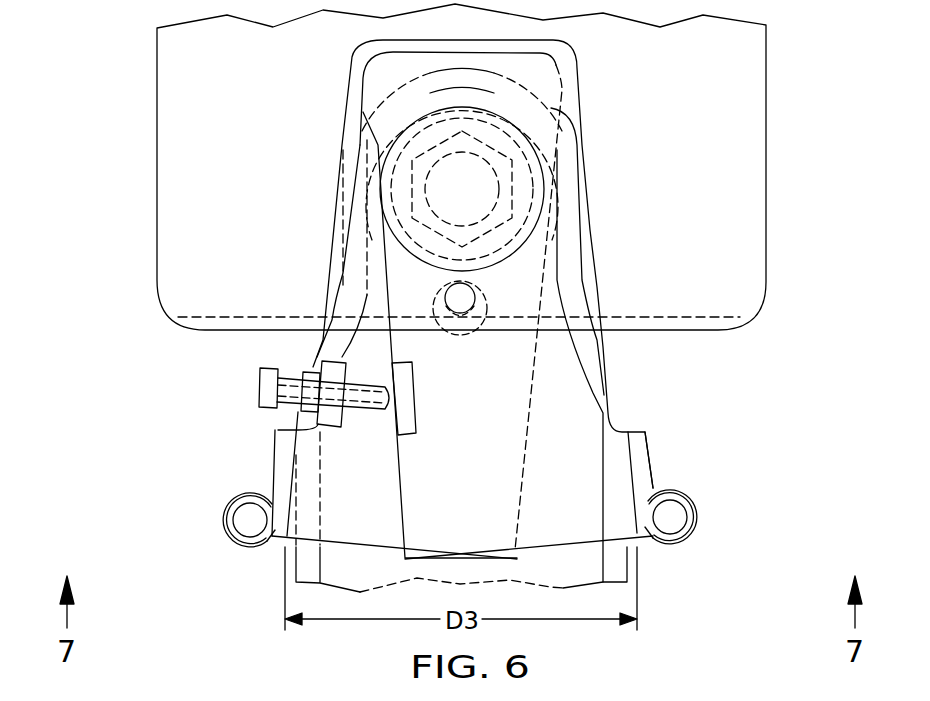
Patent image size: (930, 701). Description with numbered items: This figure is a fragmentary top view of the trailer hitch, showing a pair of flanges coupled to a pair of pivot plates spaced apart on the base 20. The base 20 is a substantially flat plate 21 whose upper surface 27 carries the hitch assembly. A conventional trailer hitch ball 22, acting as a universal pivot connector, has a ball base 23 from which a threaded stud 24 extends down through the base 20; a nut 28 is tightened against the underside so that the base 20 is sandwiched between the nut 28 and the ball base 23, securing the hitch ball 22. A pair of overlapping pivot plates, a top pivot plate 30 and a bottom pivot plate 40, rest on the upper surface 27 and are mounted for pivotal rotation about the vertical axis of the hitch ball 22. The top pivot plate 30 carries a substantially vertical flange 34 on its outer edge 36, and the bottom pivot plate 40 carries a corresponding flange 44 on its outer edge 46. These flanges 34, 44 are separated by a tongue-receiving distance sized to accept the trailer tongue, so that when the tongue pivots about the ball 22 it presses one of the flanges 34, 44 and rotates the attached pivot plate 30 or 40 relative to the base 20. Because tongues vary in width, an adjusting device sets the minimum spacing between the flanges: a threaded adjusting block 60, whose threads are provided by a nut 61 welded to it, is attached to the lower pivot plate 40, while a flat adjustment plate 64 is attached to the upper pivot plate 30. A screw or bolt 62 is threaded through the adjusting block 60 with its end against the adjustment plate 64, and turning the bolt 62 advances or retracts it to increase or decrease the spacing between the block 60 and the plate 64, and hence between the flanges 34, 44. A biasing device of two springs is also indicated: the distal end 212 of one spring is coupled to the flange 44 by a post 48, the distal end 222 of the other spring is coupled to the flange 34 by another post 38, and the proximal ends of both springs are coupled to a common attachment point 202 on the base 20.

The base 20 is at (767, 70).
The flat plate 21 is at (760, 213).
The trailer hitch ball 22 is at (527, 240).
The ball base 23 is at (405, 158).
The threaded stud 24 is at (482, 183).
The upper surface 27 is at (722, 117).
The nut 28 is at (440, 148).
The top pivot plate 30 is at (567, 60).
The flange 34 is at (645, 448).
The outer edge 36 is at (598, 287).
The post 38 is at (670, 520).
The bottom pivot plate 40 is at (357, 65).
The flange 44 is at (283, 465).
The outer edge 46 is at (327, 273).
The post 48 is at (252, 522).
The threaded adjusting block 60 is at (328, 422).
The nut 61 is at (308, 370).
The screw or bolt 62 is at (262, 390).
The flat adjustment plate 64 is at (412, 415).
The attachment point 202 is at (460, 322).
The distal end 212 is at (235, 512).
The distal end 222 is at (692, 515).